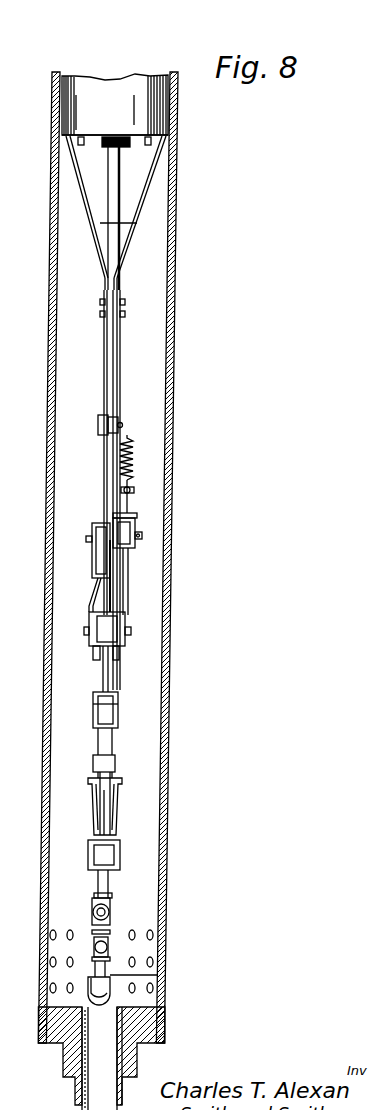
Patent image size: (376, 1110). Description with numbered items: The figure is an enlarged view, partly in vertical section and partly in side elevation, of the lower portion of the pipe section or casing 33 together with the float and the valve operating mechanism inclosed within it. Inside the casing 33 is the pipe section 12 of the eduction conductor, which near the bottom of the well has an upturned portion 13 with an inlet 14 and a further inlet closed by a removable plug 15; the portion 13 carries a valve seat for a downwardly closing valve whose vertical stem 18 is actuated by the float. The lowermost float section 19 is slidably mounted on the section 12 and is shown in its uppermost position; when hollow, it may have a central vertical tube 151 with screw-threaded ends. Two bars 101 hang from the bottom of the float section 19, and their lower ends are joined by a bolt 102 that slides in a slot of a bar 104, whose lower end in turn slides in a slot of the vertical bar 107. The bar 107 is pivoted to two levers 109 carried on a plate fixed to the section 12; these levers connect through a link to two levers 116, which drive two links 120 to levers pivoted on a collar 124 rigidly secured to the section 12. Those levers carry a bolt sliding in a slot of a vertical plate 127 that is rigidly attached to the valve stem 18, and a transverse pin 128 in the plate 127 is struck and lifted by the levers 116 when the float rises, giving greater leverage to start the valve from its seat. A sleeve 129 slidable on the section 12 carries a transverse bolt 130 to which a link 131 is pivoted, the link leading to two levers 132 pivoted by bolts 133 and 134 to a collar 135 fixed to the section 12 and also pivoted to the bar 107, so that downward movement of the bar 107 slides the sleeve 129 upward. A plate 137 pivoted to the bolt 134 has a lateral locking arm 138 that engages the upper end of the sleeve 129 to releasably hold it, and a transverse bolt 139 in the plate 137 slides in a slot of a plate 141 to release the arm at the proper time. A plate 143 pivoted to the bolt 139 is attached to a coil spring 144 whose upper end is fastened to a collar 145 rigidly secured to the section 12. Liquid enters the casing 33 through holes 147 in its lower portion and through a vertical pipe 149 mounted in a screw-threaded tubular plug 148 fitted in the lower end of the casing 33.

The section 12 is at (112, 252).
The upturned portion 13 is at (112, 968).
The inlet 14 is at (112, 912).
The removable plug 15 is at (94, 947).
The vertical stem 18 is at (110, 882).
The float section 19 is at (62, 105).
The pipe section or casing 33 is at (50, 362).
The bars 101 is at (143, 199).
The bolt 102 is at (123, 314).
The bar 104 is at (111, 346).
The vertical bar 107 is at (117, 595).
The levers 109 is at (116, 725).
The levers 116 is at (116, 864).
The links 120 is at (122, 800).
The collar 124 is at (115, 762).
The vertical plate 127 is at (118, 781).
The transverse pin 128 is at (118, 801).
The sleeve 129 is at (100, 570).
The transverse bolt 130 is at (88, 540).
The link 131 is at (100, 568).
The levers 132 is at (96, 652).
The bolt 133 is at (86, 631).
The bolt 134 is at (131, 632).
The collar 135 is at (119, 654).
The plate 137 is at (128, 600).
The lateral locking arm 138 is at (137, 515).
The transverse bolt 139 is at (143, 536).
The plate 141 is at (138, 523).
The plate 143 is at (129, 494).
The coil spring 144 is at (133, 444).
The collar 145 is at (98, 424).
The holes 147 is at (160, 943).
The screw-threaded tubular plug 148 is at (54, 1044).
The vertical pipe 149 is at (80, 1092).
The central vertical tube 151 is at (130, 146).